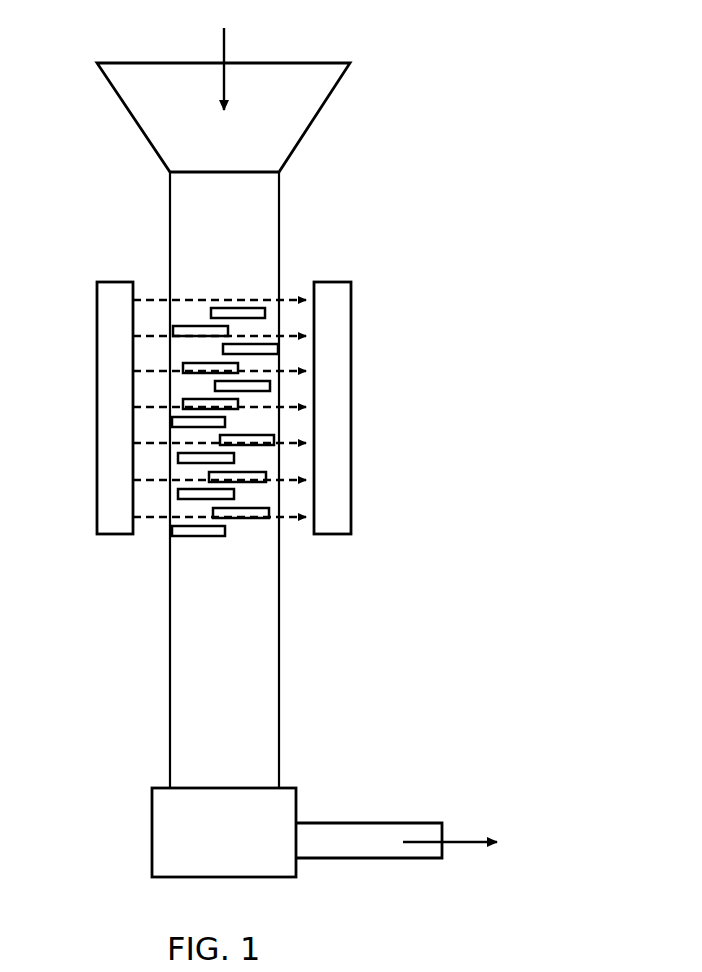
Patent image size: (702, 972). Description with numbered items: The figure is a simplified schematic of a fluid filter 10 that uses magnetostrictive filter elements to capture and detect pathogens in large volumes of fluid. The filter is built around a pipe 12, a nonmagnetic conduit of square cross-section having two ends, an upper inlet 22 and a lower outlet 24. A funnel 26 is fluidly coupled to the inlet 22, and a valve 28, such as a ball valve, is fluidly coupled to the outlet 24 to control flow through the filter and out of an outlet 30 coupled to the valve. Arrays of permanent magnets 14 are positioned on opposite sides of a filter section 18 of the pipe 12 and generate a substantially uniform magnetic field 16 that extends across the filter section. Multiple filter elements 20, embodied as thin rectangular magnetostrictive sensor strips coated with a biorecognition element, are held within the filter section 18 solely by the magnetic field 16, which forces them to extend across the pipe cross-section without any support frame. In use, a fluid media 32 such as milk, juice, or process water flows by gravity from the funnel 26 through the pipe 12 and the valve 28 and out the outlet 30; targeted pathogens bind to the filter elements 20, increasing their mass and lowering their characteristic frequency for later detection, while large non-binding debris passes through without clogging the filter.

The fluid filter 10 is at (584, 76).
The pipe 12 is at (279, 233).
The permanent magnets 14 is at (117, 308).
The magnetic field 16 is at (150, 276).
The filter section 18 is at (261, 558).
The filter elements 20 is at (233, 314).
The inlet 22 is at (261, 164).
The outlet 24 is at (250, 794).
The funnel 26 is at (172, 128).
The valve 28 is at (163, 818).
The outlet 30 is at (445, 818).
The fluid media 32 is at (224, 57).